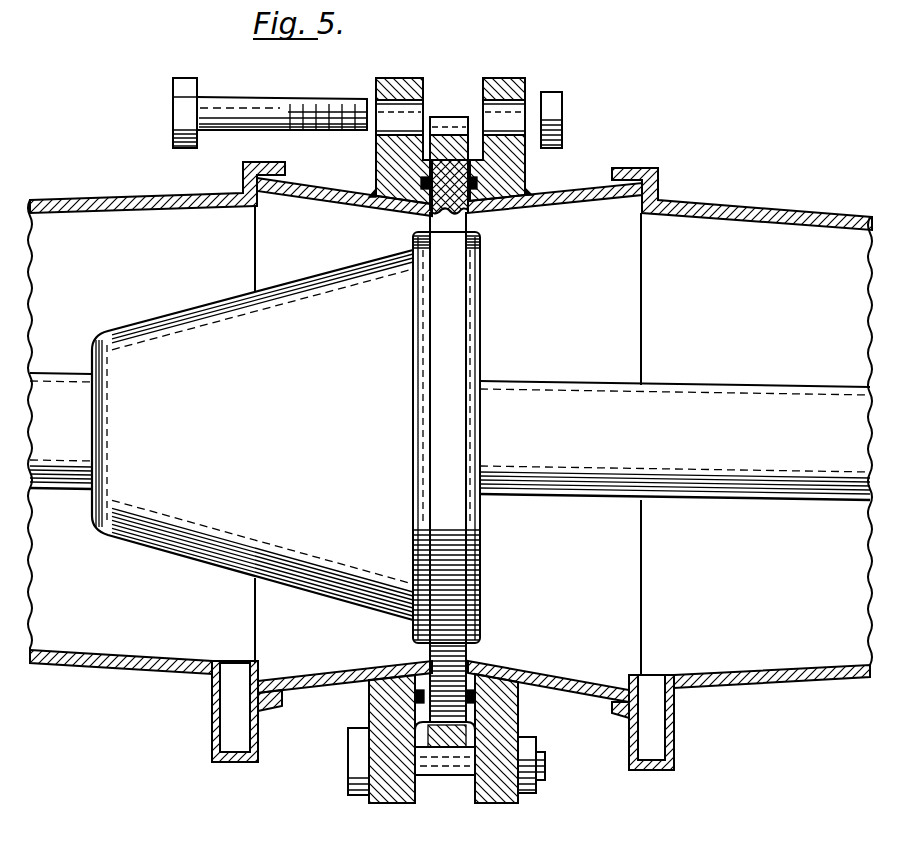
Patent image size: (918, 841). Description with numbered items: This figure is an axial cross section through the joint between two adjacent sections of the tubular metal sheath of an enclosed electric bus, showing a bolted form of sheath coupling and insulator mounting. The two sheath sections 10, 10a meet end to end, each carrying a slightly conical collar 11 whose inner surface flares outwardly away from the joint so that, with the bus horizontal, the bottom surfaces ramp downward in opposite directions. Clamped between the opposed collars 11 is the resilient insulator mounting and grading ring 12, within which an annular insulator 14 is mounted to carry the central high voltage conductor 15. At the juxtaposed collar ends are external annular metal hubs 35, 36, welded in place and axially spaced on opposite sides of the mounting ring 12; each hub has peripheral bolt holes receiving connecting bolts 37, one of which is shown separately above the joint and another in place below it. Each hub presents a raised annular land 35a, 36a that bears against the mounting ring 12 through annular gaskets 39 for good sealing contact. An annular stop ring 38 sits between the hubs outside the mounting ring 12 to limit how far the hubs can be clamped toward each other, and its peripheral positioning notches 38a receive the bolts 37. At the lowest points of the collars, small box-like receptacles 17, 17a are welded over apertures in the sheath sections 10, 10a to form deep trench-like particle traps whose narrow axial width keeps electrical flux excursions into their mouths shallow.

The sheath section 10 is at (129, 200).
The sheath section 10a is at (769, 213).
The conical collar 11 is at (330, 198).
The insulator mounting ring 12 is at (458, 292).
The annular insulator 14 is at (205, 318).
The central high voltage conductor 15 is at (569, 395).
The particle trap receptacle 17 is at (212, 724).
The particle trap receptacle 17a is at (674, 742).
The annular metal hub 35 is at (391, 78).
The raised annular land 35a is at (431, 197).
The annular metal hub 36 is at (508, 78).
The raised annular land 36a is at (475, 202).
The connecting bolt 37 is at (251, 107).
The annular stop ring 38 is at (441, 145).
The positioning notch 38a is at (451, 117).
The annular gasket 39 is at (479, 182).